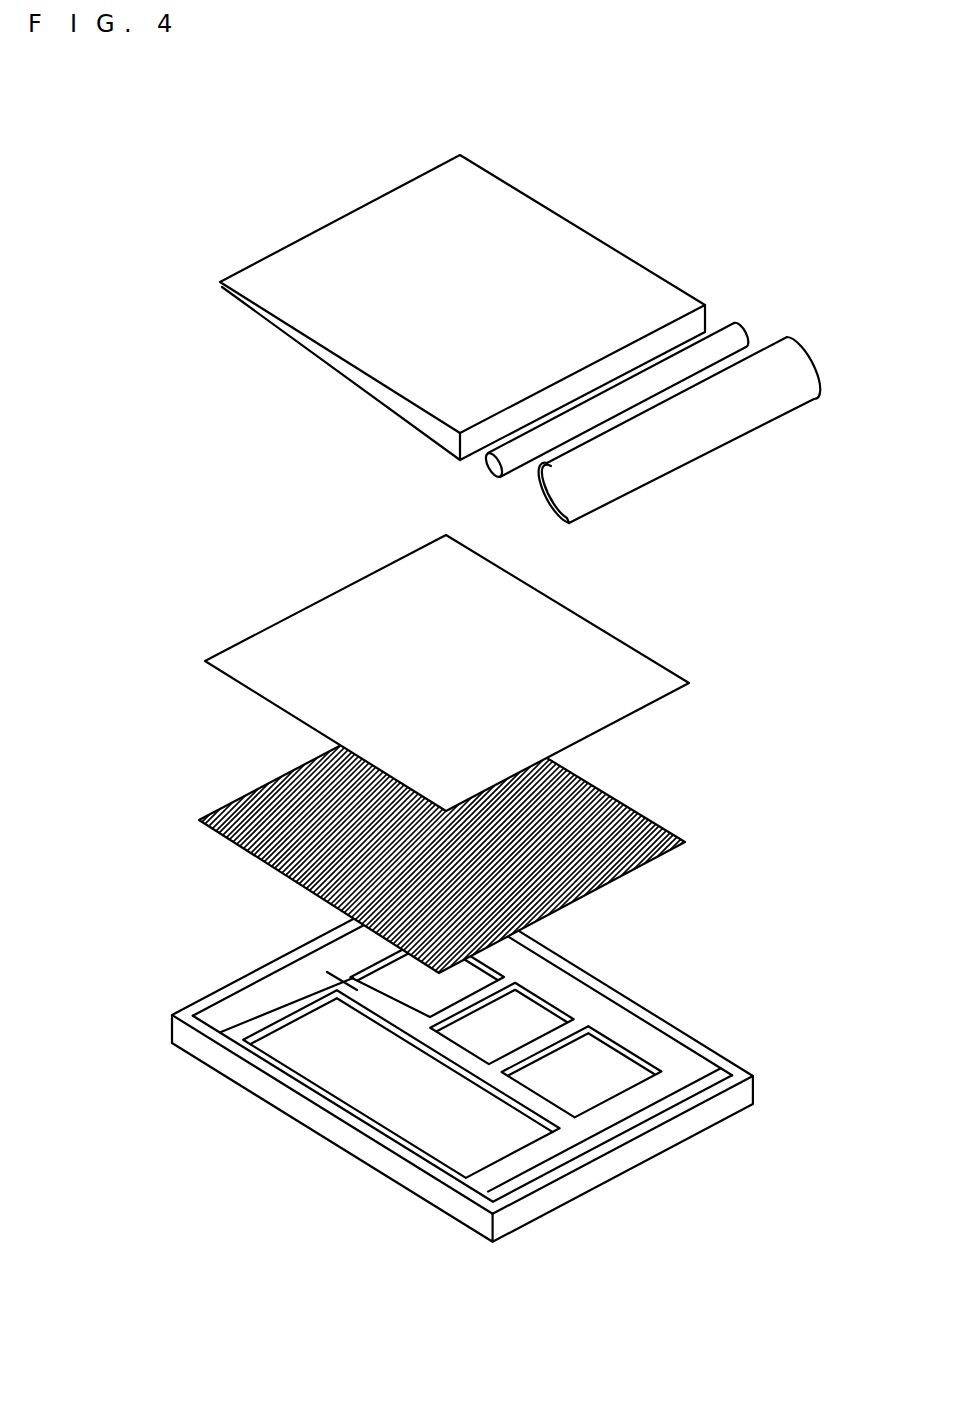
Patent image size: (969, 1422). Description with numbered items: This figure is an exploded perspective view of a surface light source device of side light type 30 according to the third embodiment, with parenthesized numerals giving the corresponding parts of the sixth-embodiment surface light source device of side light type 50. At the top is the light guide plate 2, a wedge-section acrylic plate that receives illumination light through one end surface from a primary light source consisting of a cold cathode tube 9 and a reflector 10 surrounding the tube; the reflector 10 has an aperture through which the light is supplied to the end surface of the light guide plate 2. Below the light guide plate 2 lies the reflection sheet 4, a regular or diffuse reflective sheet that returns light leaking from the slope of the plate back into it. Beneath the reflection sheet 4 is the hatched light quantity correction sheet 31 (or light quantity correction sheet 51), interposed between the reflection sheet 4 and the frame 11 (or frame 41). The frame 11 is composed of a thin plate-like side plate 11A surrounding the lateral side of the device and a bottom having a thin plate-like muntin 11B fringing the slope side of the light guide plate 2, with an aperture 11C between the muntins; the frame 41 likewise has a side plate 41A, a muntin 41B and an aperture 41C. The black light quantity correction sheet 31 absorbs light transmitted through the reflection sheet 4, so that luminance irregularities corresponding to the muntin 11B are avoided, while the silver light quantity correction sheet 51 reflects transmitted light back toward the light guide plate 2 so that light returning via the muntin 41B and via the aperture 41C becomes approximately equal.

The light guide plate 2 is at (260, 283).
The reflection sheet 4 is at (546, 717).
The cold cathode tube 9 is at (523, 456).
The reflector 10 is at (667, 442).
The frame 11 is at (422, 1064).
The side plate 11A is at (603, 982).
The muntin 11B is at (256, 960).
The aperture 11C is at (315, 1084).
The surface light source device of side light type 30 is at (454, 754).
The light quantity correction sheet 31 is at (454, 820).
The frame 41 is at (422, 1064).
The side plate 41A is at (645, 1030).
The muntin 41B is at (287, 955).
The aperture 41C is at (325, 1078).
The surface light source device of side light type 50 is at (122, 1198).
The light quantity correction sheet 51 is at (541, 895).